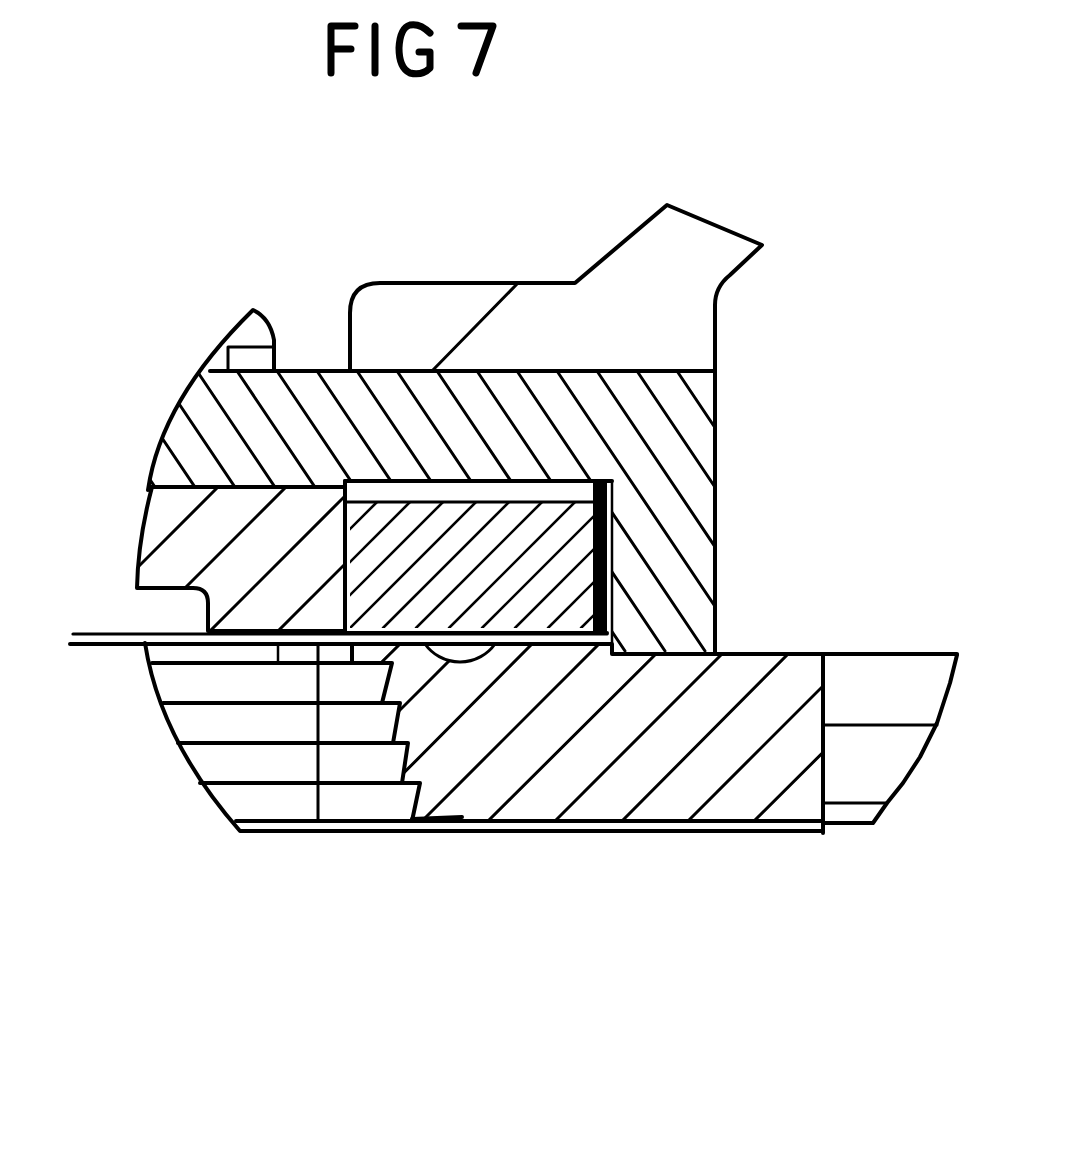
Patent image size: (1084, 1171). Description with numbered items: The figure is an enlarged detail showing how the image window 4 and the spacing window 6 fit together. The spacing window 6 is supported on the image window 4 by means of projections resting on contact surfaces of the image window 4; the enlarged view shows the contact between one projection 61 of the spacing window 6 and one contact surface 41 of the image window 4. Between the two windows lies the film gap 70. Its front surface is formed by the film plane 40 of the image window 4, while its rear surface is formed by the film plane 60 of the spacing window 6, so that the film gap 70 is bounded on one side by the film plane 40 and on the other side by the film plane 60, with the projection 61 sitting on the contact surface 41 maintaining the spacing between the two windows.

The image window 4 is at (750, 787).
The spacing window 6 is at (680, 438).
The film plane 40 is at (112, 647).
The contact surface 41 is at (745, 654).
The film plane 60 is at (110, 631).
The projection 61 is at (662, 570).
The film gap 70 is at (278, 644).